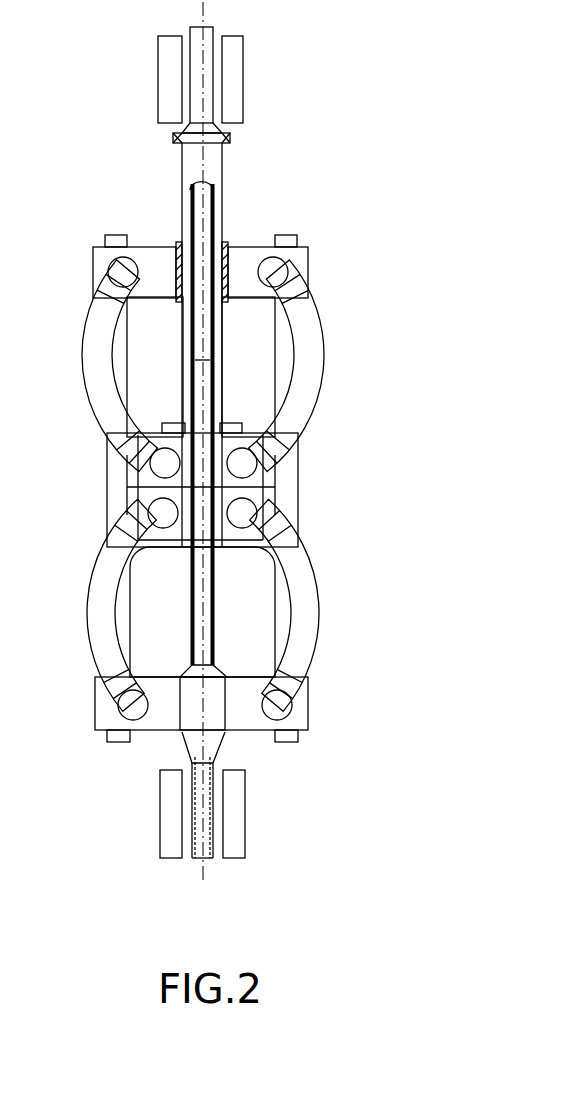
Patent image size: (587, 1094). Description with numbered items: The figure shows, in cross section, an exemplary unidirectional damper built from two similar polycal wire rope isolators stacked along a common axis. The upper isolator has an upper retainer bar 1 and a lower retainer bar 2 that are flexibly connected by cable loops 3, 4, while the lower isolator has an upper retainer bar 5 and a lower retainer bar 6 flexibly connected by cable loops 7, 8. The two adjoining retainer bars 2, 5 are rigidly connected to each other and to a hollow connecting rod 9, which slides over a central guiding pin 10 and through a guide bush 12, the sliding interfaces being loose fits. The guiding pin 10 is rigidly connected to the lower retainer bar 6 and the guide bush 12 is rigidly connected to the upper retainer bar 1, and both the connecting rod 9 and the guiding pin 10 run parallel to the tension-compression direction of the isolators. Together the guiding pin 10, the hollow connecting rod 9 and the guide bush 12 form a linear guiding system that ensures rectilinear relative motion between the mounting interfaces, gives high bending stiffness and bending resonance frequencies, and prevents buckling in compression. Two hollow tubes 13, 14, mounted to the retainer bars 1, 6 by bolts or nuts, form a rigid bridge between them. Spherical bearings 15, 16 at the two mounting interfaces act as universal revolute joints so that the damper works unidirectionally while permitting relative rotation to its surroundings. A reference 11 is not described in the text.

The upper retainer bar 1 is at (200, 236).
The lower retainer bar 2 is at (244, 461).
The cable loop 3 is at (93, 366).
The cable loop 4 is at (318, 366).
The upper retainer bar 5 is at (244, 512).
The lower retainer bar 6 is at (201, 734).
The cable loop 7 is at (93, 605).
The cable loop 8 is at (320, 605).
The hollow connecting rod 9 is at (248, 367).
The central guiding pin 10 is at (202, 612).
The shaft 11 is at (201, 442).
The guide bush 12 is at (155, 367).
The hollow tube 13 is at (301, 531).
The hollow tube 14 is at (166, 498).
The spherical bearing 15 is at (234, 76).
The spherical bearing 16 is at (239, 814).